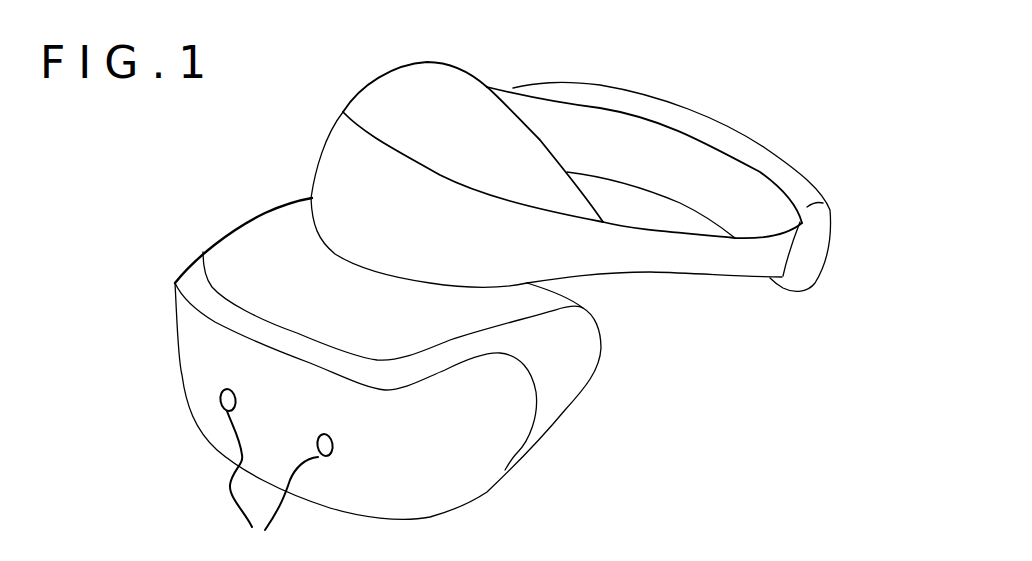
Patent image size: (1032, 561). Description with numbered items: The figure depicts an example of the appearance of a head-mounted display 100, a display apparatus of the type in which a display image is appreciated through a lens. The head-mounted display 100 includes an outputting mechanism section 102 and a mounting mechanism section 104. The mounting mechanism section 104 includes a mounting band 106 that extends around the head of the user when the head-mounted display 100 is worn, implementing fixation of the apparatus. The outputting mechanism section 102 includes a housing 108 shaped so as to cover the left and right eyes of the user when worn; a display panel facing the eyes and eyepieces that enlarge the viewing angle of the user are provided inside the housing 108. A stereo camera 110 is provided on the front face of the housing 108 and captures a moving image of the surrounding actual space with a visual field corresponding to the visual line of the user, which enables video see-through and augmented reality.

The head-mounted display 100 is at (272, 135).
The outputting mechanism section 102 is at (130, 188).
The mounting mechanism section 104 is at (838, 125).
The mounting band 106 is at (693, 280).
The housing 108 is at (486, 493).
The stereo camera 110 is at (277, 474).